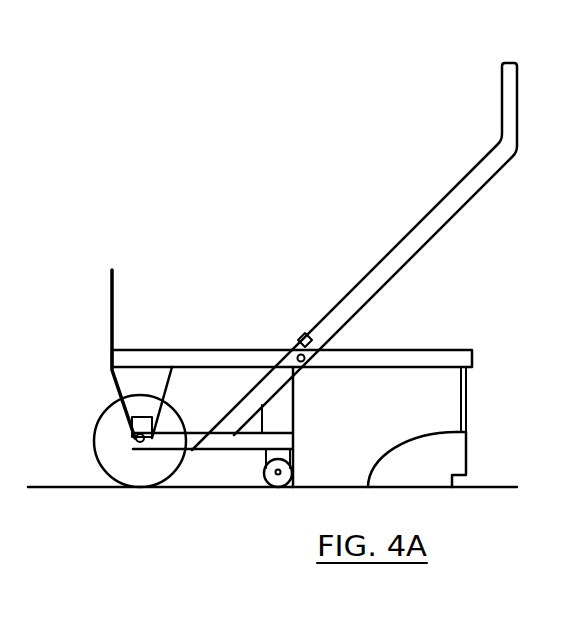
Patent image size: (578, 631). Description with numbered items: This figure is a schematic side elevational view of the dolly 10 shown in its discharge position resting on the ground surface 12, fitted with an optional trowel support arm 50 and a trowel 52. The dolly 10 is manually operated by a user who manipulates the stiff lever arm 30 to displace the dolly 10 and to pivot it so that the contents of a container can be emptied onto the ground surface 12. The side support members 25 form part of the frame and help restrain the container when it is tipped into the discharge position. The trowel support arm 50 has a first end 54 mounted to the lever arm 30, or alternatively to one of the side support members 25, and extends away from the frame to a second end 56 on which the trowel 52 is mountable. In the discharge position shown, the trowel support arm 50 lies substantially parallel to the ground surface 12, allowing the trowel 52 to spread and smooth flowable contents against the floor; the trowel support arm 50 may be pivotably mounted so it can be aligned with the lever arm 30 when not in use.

The dolly 10 is at (323, 147).
The ground surface 12 is at (488, 489).
The side support members 25 is at (217, 360).
The lever arm 30 is at (387, 230).
The trowel support arm 50 is at (407, 358).
The trowel 52 is at (418, 450).
The first end 54 is at (305, 337).
The second end 56 is at (415, 389).